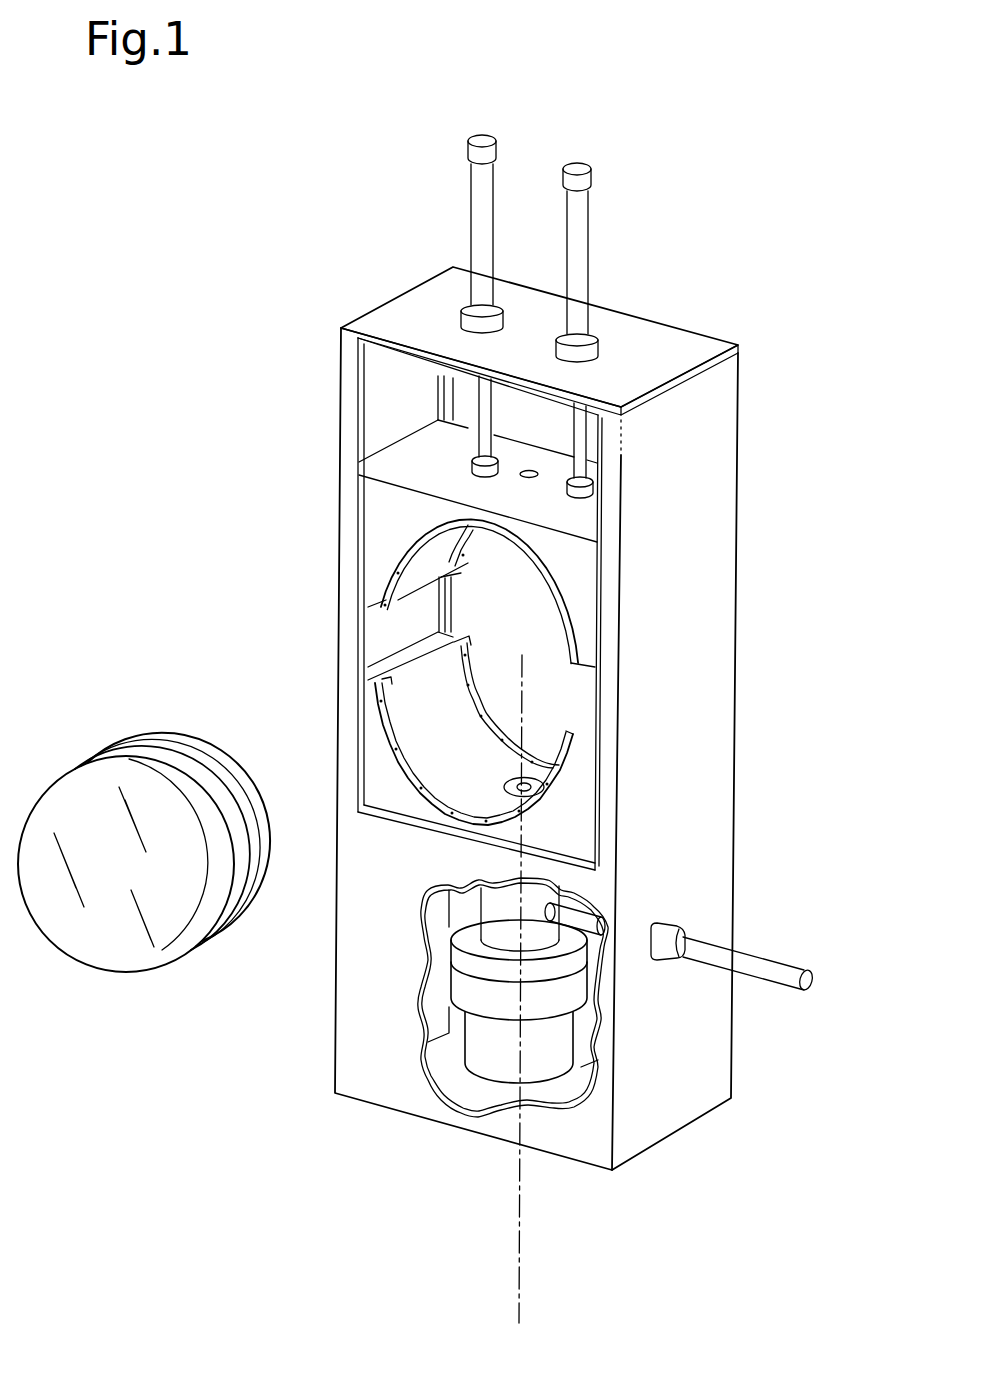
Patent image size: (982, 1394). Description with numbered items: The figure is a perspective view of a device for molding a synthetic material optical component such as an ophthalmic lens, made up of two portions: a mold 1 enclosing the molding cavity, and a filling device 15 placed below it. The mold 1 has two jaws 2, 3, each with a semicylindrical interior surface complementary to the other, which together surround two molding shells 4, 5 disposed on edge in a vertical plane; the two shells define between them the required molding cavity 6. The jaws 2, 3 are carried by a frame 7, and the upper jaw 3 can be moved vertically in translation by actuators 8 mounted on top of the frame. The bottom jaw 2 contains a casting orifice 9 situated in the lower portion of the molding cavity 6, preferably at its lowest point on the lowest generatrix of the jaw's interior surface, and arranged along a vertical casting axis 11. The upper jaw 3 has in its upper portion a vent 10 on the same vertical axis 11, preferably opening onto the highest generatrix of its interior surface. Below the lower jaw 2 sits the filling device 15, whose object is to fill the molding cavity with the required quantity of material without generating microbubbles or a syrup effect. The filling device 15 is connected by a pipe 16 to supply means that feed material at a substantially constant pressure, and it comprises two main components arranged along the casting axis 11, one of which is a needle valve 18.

The mold 1 is at (388, 434).
The bottom jaw 2 is at (374, 780).
The upper jaw 3 is at (378, 503).
The molding shell 4 is at (177, 742).
The molding shell 5 is at (132, 763).
The molding cavity 6 is at (233, 843).
The frame 7 is at (742, 392).
The actuators 8 is at (573, 247).
The casting orifice 9 is at (523, 780).
The vent 10 is at (527, 471).
The casting axis 11 is at (517, 1243).
The filling device 15 is at (426, 983).
The pipe 16 is at (785, 968).
The needle valve 18 is at (471, 907).